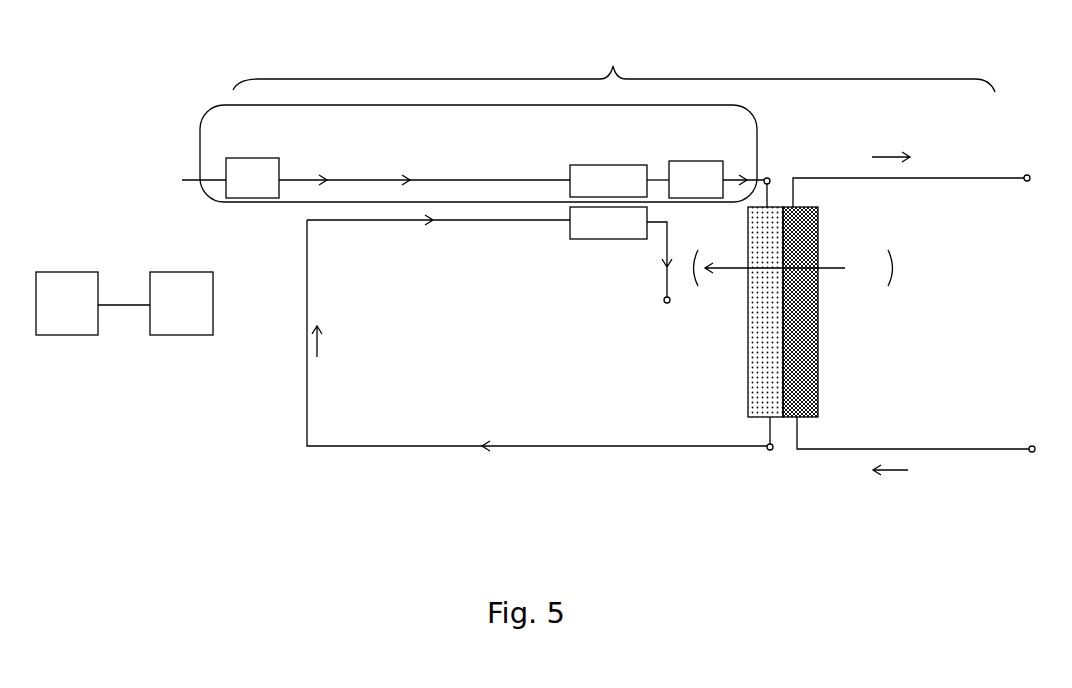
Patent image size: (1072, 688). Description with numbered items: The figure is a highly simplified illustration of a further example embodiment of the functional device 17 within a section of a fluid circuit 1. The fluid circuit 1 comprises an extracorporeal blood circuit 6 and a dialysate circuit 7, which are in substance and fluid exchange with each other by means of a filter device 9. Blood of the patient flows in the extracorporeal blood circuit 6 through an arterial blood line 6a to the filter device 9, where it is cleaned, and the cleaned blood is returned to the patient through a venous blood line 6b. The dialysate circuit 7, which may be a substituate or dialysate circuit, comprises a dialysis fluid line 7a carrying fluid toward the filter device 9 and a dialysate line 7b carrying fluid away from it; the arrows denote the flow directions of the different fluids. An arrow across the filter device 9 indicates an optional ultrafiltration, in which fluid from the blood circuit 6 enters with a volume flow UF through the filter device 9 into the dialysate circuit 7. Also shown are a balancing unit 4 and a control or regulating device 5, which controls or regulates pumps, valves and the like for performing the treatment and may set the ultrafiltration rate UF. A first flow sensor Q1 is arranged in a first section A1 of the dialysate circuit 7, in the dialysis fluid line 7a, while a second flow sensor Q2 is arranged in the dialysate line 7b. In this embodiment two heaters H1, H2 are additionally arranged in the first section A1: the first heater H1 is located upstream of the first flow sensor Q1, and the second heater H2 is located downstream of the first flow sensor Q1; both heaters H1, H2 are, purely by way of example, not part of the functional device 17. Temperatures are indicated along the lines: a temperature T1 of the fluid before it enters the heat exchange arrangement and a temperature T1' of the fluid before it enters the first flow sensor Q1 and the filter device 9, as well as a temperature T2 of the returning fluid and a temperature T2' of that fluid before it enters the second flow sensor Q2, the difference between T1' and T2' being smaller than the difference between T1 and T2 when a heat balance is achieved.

The fluid circuit 1 is at (162, 116).
The functional device 17 is at (614, 62).
The first section A1 is at (752, 123).
The dialysis fluid line 7a is at (189, 183).
The dialysate line 7b is at (678, 447).
The dialysate circuit 7 is at (484, 352).
The extracorporeal blood circuit 6 is at (922, 330).
The arterial blood line 6a is at (940, 449).
The venous blood line 6b is at (933, 178).
The filter device 9 is at (783, 418).
The balancing unit 4 is at (93, 303).
The control or regulating device 5 is at (181, 303).
The ultrafiltration rate UF is at (793, 268).
The first heater H1 is at (252, 178).
The second heater H2 is at (696, 179).
The first flow sensor Q1 is at (608, 181).
The second flow sensor Q2 is at (608, 223).
The temperature T1 is at (304, 165).
The temperature T1' is at (537, 163).
The temperature T2 is at (321, 238).
The temperature T2' is at (537, 240).